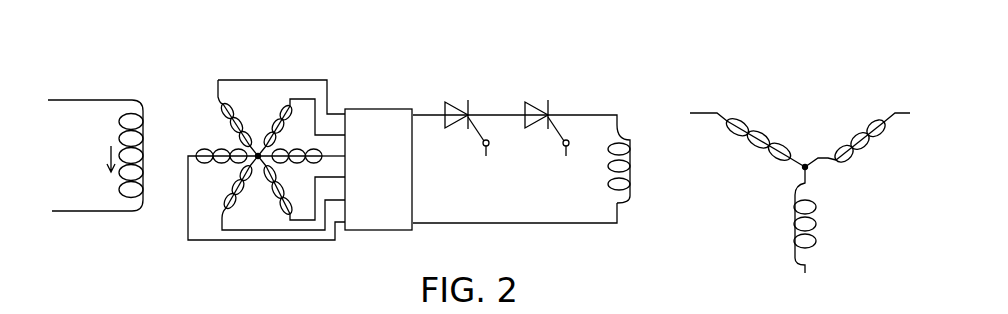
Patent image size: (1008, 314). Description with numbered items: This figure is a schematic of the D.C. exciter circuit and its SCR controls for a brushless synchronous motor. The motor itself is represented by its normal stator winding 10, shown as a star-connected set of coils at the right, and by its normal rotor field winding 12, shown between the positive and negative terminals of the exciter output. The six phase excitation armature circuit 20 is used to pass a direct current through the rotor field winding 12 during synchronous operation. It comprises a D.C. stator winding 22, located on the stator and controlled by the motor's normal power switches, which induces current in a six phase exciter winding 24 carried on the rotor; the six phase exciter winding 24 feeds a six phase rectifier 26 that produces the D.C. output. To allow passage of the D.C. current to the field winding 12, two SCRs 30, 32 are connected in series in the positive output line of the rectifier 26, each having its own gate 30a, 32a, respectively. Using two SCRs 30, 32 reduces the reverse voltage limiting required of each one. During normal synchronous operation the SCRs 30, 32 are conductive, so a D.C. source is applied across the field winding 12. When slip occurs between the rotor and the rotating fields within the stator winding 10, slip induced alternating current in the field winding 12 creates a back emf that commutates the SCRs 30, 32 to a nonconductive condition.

The stator winding 10 is at (825, 132).
The rotor field winding 12 is at (609, 184).
The six phase excitation armature circuit 20 is at (267, 60).
The D.C. stator winding 22 is at (128, 217).
The six phase exciter winding 24 is at (247, 242).
The six phase rectifier 26 is at (376, 222).
The SCR 30 is at (455, 100).
The gate 30a is at (482, 143).
The SCR 32 is at (537, 100).
The gate 32a is at (562, 143).